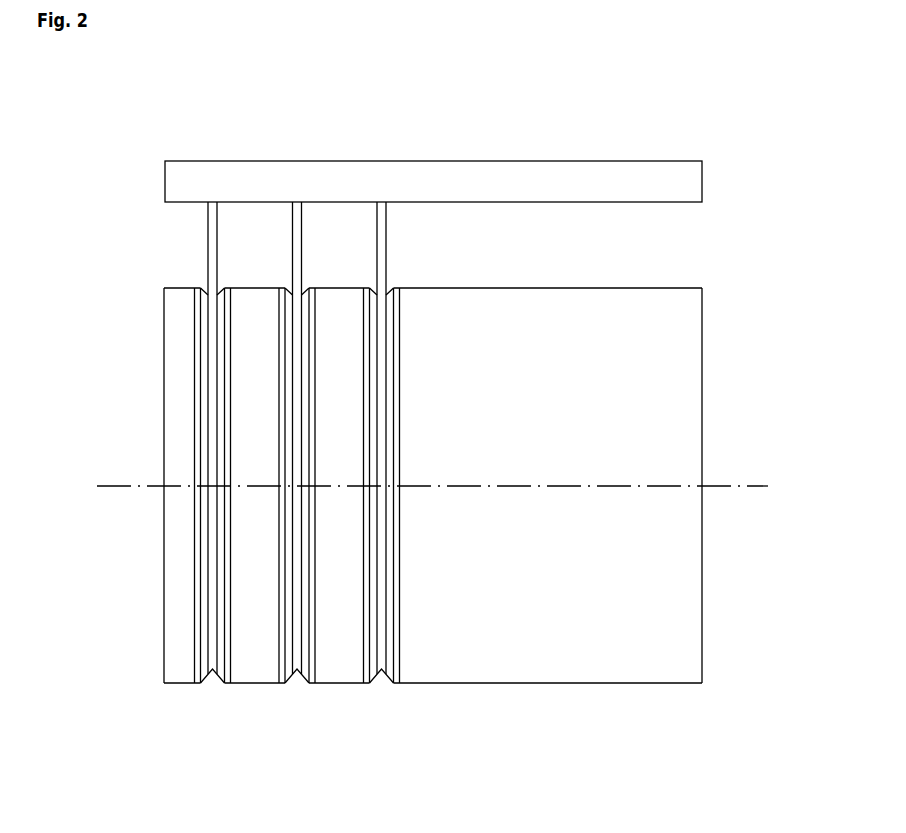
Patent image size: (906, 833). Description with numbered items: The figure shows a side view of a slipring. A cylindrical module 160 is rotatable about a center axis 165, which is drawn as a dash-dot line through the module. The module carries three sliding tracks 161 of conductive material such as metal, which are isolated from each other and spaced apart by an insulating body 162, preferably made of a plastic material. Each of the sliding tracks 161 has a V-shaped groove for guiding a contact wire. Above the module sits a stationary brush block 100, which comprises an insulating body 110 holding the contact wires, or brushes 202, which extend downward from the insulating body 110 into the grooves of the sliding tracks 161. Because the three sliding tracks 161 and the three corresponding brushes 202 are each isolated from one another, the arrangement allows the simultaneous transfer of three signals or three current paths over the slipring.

The brush block 100 is at (255, 140).
The insulating body 110 is at (496, 180).
The cylindrical module 160 is at (529, 278).
The sliding track 161 is at (211, 672).
The insulating body 162 is at (257, 668).
The center axis 165 is at (750, 484).
The contact wire 202 is at (377, 256).